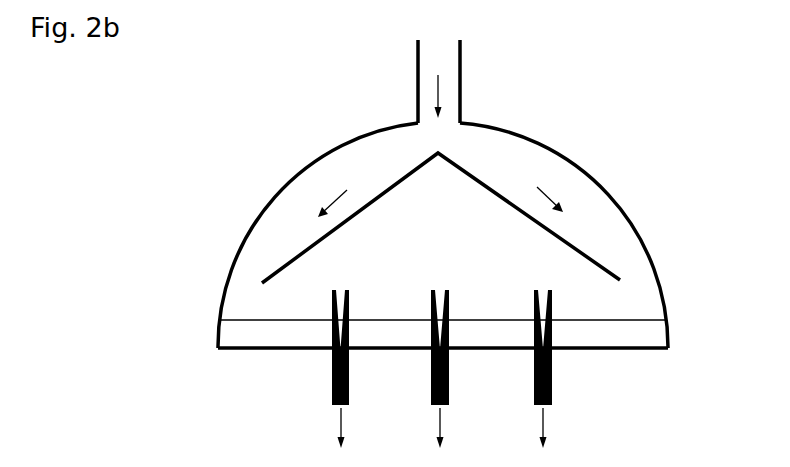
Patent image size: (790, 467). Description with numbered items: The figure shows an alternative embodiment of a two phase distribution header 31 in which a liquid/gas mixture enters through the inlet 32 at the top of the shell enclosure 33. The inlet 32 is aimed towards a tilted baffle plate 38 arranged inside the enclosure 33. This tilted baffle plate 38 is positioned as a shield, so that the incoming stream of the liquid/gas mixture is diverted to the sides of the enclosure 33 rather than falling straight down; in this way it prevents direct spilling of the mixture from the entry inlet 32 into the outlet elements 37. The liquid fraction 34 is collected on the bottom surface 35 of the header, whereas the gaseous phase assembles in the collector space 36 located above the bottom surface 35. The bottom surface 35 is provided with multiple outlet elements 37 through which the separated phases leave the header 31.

The two phase distribution header 31 is at (291, 100).
The inlet 32 is at (428, 92).
The shell enclosure 33 is at (565, 155).
The liquid fraction 34 is at (253, 332).
The bottom surface 35 is at (216, 348).
The collector space 36 is at (455, 258).
The outlet elements 37 is at (332, 384).
The tilted baffle plate 38 is at (302, 251).